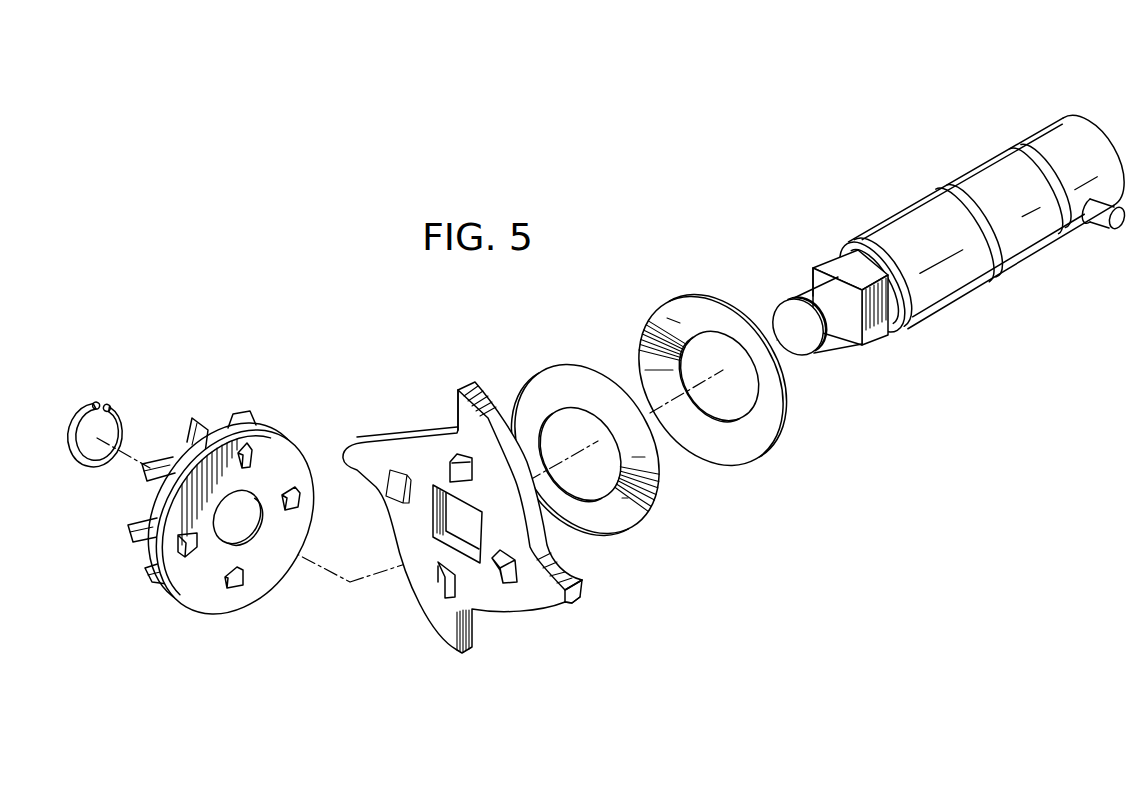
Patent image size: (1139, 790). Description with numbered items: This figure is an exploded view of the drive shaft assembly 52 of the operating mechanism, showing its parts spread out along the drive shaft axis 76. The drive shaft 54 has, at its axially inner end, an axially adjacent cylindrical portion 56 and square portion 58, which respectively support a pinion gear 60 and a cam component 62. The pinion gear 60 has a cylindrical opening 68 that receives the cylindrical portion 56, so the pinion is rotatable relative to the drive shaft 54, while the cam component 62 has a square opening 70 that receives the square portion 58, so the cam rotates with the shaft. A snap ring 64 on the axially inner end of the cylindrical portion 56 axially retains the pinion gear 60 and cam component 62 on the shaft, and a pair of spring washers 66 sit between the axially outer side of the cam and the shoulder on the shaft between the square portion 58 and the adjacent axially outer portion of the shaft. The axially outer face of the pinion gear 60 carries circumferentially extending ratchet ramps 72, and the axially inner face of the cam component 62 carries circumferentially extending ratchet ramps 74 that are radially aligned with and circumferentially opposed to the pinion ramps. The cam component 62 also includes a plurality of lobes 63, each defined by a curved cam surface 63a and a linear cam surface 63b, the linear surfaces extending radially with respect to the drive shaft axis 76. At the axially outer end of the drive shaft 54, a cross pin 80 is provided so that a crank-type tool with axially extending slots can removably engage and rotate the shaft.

The drive shaft assembly 52 is at (729, 612).
The drive shaft 54 is at (957, 310).
The cylindrical portion 56 is at (837, 328).
The square portion 58 is at (878, 328).
The pinion gear 60 is at (198, 603).
The cam component 62 is at (503, 612).
The lobes 63 is at (548, 601).
The curved cam surface 63a is at (571, 602).
The linear cam surface 63b is at (573, 579).
The snap ring 64 is at (118, 418).
The spring washers 66 is at (645, 360).
The cylindrical opening 68 is at (238, 533).
The square opening 70 is at (447, 540).
The ratchet ramps 72 is at (250, 455).
The ratchet ramps 74 is at (448, 460).
The drive shaft axis 76 is at (777, 340).
The cross pin 80 is at (1106, 230).